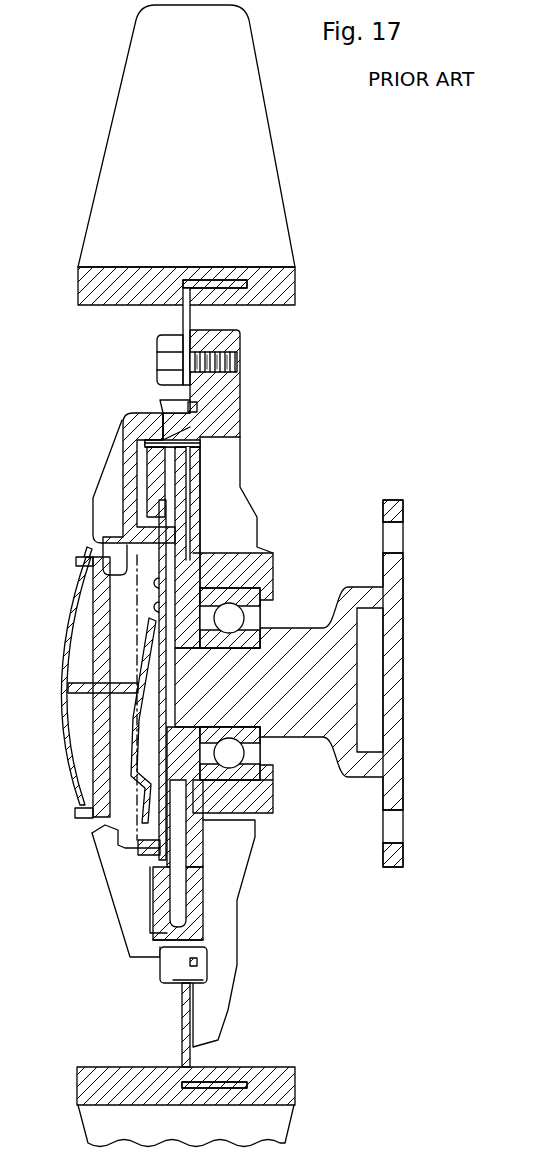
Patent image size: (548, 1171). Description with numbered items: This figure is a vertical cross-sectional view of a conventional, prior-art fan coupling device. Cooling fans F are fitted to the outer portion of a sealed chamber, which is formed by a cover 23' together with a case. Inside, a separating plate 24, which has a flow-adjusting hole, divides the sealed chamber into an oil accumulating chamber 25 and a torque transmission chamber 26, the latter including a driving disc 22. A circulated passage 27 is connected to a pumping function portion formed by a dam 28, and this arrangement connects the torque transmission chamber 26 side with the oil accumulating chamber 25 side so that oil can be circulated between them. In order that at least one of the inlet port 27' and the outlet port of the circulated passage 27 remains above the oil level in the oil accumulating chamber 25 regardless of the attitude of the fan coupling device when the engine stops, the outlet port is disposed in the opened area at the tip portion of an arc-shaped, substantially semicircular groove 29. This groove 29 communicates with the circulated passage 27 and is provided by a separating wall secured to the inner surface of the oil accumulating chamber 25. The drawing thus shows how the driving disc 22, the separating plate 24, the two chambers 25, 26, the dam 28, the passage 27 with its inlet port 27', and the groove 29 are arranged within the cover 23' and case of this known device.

The cooling fan F is at (272, 178).
The driving disc 22 is at (180, 540).
The cover 23' is at (111, 494).
The separating plate 24 is at (155, 770).
The oil accumulating chamber 25 is at (123, 603).
The torque transmission chamber 26 is at (195, 575).
The circulated passage 27 is at (118, 482).
The inlet port 27' is at (155, 406).
The dam 28 is at (183, 443).
The arc-shaped semicircular groove 29 is at (133, 647).